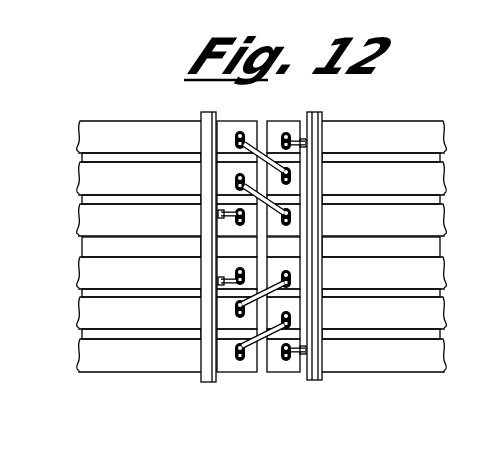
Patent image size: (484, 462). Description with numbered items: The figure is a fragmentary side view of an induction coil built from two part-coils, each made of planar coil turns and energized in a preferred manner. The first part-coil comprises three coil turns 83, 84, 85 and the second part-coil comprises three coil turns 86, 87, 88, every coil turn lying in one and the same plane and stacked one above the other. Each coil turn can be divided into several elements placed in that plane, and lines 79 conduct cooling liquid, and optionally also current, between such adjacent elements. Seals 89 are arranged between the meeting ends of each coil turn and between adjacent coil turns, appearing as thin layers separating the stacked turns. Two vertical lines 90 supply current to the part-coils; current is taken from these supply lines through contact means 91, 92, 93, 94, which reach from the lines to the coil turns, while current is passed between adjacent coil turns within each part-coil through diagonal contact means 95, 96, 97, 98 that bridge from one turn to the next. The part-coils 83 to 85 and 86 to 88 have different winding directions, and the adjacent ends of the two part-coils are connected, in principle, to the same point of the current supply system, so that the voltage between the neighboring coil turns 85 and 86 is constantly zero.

The lines 79 is at (294, 268).
The coil turn 83 is at (80, 355).
The coil turn 84 is at (80, 312).
The coil turn 85 is at (80, 272).
The coil turn 86 is at (80, 225).
The coil turn 87 is at (80, 177).
The coil turn 88 is at (80, 135).
The seals 89 is at (88, 198).
The lines 90 is at (205, 126).
The contact means 91 is at (304, 350).
The contact means 92 is at (222, 281).
The contact means 93 is at (222, 214).
The contact means 94 is at (305, 140).
The contact means 95 is at (236, 345).
The contact means 96 is at (240, 302).
The contact means 97 is at (300, 200).
The contact means 98 is at (243, 160).